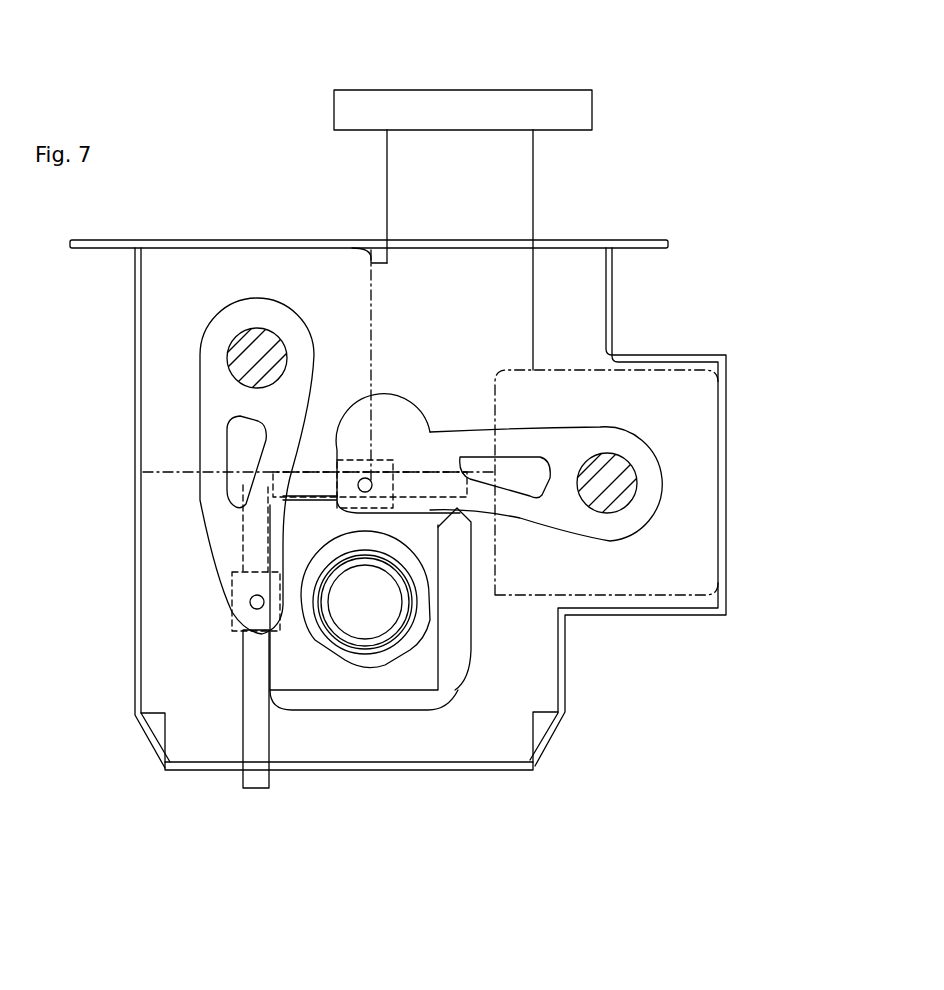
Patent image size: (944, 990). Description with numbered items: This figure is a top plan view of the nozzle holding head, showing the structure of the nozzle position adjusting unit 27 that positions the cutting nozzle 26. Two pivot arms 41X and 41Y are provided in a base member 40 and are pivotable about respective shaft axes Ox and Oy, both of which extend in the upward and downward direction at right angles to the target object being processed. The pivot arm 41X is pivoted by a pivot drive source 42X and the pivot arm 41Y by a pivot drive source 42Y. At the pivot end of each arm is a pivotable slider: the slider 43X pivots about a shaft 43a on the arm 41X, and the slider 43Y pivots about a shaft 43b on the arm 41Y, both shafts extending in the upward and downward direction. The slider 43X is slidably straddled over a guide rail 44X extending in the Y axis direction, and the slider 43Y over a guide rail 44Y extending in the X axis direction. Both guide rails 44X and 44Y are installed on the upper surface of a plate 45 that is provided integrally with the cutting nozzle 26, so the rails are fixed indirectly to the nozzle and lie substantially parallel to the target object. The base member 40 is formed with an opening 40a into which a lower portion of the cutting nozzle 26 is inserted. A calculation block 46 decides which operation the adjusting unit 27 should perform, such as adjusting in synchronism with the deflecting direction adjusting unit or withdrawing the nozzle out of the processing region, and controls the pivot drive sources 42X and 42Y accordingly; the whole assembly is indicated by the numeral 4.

The lens driving device 4 is at (598, 713).
The cutting nozzle 26 is at (385, 660).
The nozzle position adjusting unit 27 is at (177, 662).
The base member 40 is at (135, 558).
The opening 40a is at (462, 650).
The pivot arm 41X is at (200, 487).
The pivot arm 41Y is at (537, 420).
The pivot drive source 42X is at (170, 370).
The pivot drive source 42Y is at (668, 382).
The shaft 43a is at (250, 600).
The shaft 43b is at (370, 482).
The pivotable slider 43X is at (227, 613).
The pivotable slider 43Y is at (372, 478).
The guide rail 44X is at (240, 740).
The guide rail 44Y is at (310, 470).
The plate 45 is at (335, 680).
The calculation block 46 is at (541, 90).
The shaft axis Ox is at (257, 315).
The shaft axis Oy is at (607, 483).